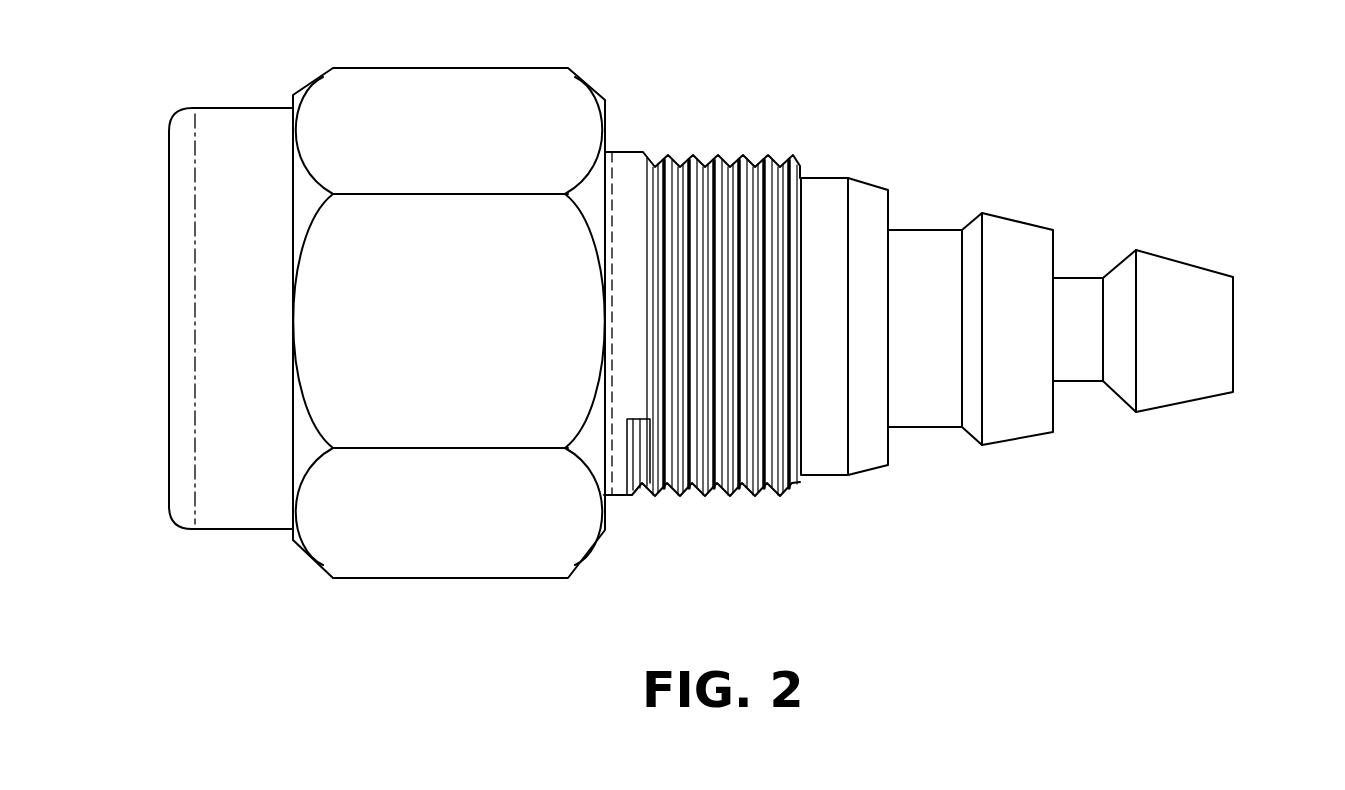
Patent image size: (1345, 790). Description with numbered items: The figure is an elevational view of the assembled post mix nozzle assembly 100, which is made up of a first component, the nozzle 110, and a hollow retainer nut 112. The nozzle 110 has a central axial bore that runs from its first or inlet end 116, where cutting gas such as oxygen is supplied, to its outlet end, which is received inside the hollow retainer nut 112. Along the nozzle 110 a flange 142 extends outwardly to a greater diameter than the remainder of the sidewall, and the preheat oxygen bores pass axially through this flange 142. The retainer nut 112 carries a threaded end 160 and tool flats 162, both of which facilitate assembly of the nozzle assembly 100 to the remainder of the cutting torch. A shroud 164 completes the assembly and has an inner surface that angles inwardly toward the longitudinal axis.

The post mix nozzle assembly 100 is at (842, 89).
The nozzle 110 is at (1020, 204).
The hollow retainer nut 112 is at (449, 366).
The inlet end 116 is at (1237, 298).
The flange 142 is at (830, 462).
The threaded end 160 is at (718, 157).
The tool flats 162 is at (470, 372).
The shroud 164 is at (232, 518).